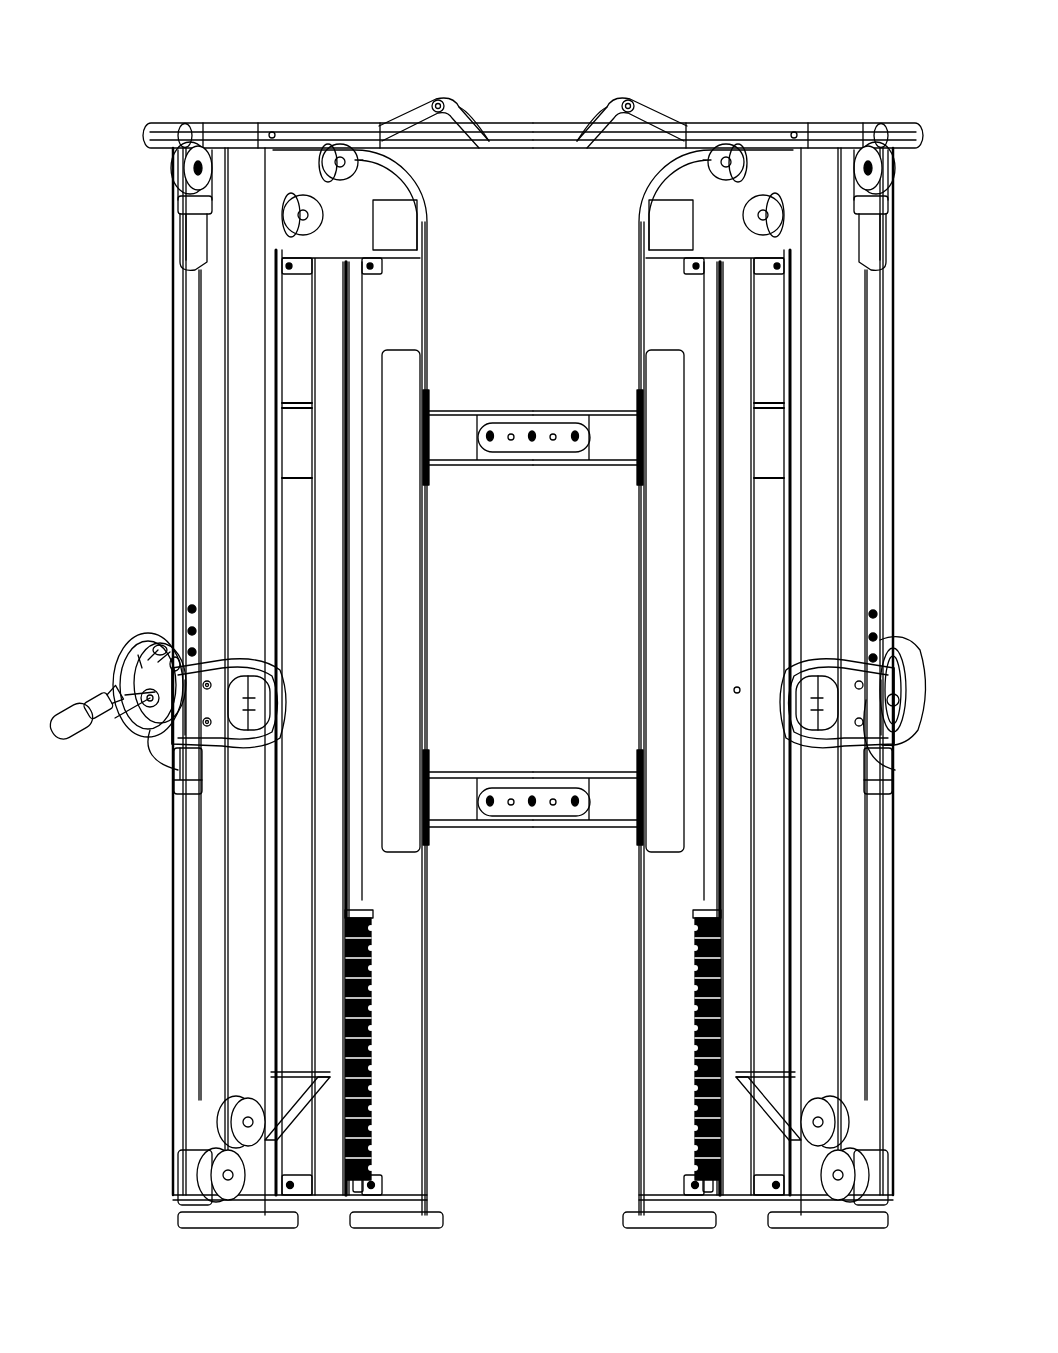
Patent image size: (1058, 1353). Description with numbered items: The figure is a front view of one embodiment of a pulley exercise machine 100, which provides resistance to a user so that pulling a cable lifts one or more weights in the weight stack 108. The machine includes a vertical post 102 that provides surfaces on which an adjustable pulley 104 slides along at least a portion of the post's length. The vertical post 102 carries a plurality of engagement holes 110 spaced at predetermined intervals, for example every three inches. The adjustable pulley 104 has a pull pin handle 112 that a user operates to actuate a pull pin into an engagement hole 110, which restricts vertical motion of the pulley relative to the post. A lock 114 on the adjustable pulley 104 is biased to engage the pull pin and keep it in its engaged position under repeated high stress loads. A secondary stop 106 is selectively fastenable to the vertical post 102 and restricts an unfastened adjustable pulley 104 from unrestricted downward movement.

The pulley exercise machine 100 is at (131, 78).
The vertical post 102 is at (190, 410).
The adjustable pulley 104 is at (120, 651).
The secondary stop 106 is at (180, 770).
The weight stack 108 is at (367, 940).
The engagement holes 110 is at (192, 609).
The pull pin handle 112 is at (237, 717).
The lock 114 is at (832, 713).